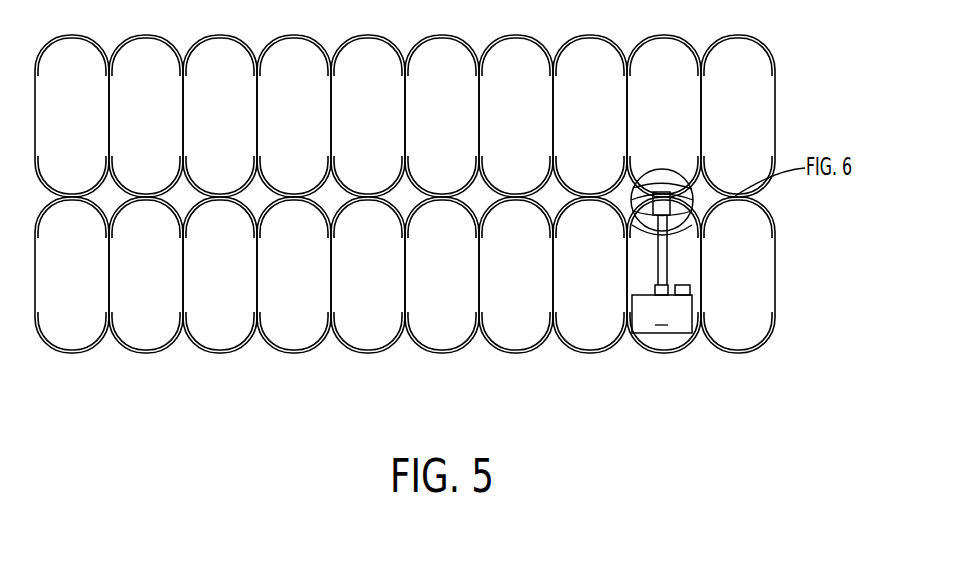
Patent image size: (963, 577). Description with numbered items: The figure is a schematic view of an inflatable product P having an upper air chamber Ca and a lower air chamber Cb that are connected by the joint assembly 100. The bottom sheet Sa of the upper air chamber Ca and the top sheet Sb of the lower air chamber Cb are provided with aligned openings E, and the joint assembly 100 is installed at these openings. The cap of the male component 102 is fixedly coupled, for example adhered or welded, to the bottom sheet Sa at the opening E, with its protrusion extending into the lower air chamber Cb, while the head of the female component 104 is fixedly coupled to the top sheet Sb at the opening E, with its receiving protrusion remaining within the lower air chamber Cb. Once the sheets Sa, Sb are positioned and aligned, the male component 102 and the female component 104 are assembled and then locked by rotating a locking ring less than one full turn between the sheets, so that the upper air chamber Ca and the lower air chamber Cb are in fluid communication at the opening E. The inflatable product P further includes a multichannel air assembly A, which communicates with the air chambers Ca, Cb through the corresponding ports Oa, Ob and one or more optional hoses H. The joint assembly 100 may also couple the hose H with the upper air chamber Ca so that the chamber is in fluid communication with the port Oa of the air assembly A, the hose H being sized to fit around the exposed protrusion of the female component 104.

The joint assembly 100 is at (641, 167).
The male component 102 is at (659, 162).
The female component 104 is at (640, 227).
The opening E is at (668, 182).
The bottom sheet Sa is at (706, 184).
The top sheet Sb is at (700, 222).
The port Oa is at (668, 287).
The port Ob is at (690, 292).
The hose H is at (657, 271).
The multichannel air assembly A is at (662, 314).
The upper air chamber Ca is at (768, 101).
The lower air chamber Cb is at (768, 273).
The inflatable product P is at (558, 357).